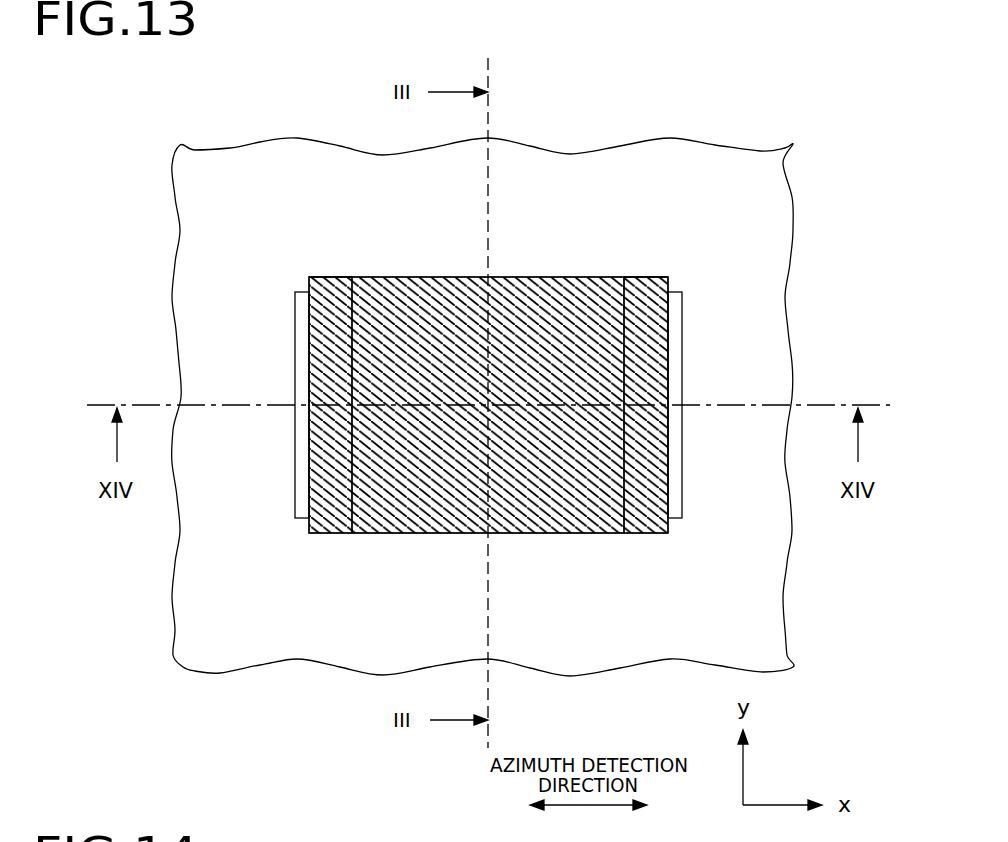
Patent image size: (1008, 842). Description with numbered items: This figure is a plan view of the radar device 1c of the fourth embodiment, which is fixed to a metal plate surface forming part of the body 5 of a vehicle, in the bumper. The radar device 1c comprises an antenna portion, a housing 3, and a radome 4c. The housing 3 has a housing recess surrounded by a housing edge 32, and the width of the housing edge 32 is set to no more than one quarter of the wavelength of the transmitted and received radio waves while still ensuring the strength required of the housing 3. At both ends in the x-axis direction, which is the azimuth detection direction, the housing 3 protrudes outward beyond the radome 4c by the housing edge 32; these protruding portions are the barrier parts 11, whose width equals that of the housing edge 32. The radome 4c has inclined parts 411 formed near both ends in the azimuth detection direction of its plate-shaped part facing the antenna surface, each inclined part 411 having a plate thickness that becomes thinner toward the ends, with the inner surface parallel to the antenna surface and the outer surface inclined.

The radar device 1c is at (712, 56).
The body 5 is at (245, 178).
The housing 3 is at (683, 311).
The radome 4c is at (407, 317).
The inclined part 411 is at (333, 520).
The housing edge 32 is at (295, 326).
The barrier part 11 is at (300, 270).